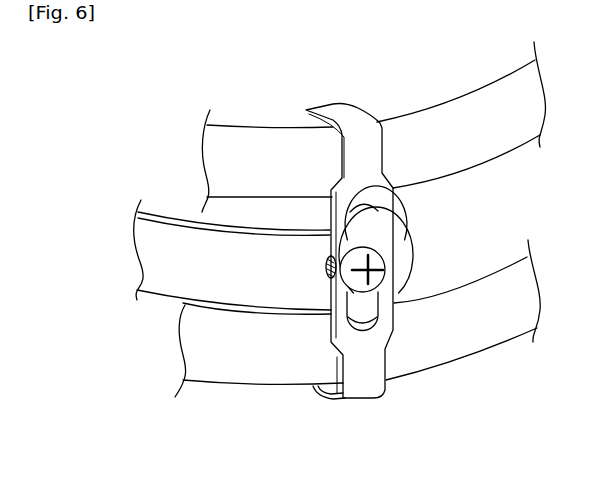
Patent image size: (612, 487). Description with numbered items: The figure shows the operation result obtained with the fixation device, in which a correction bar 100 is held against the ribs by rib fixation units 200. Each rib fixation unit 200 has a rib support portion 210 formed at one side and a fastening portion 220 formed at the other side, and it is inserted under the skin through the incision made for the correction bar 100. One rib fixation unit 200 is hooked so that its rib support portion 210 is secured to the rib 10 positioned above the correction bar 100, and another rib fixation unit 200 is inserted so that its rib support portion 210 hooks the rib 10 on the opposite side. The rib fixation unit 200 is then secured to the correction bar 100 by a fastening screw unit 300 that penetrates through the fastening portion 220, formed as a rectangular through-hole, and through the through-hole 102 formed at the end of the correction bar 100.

The rib 10 is at (478, 118).
The correction bar 100 is at (180, 257).
The through-hole 102 is at (326, 267).
The rib fixation unit 200 is at (358, 103).
The rib support portion 210 is at (336, 108).
The fastening portion 220 is at (380, 299).
The fastening screw unit 300 is at (378, 258).